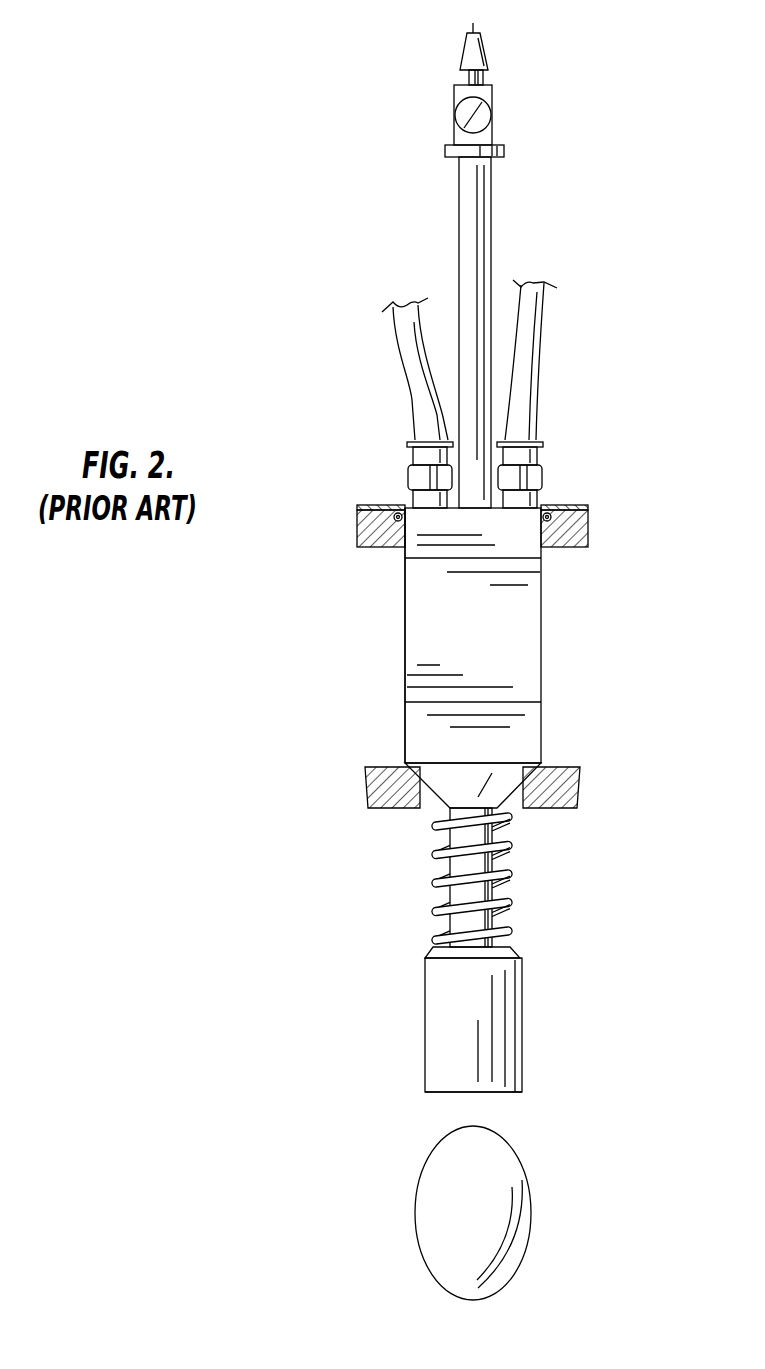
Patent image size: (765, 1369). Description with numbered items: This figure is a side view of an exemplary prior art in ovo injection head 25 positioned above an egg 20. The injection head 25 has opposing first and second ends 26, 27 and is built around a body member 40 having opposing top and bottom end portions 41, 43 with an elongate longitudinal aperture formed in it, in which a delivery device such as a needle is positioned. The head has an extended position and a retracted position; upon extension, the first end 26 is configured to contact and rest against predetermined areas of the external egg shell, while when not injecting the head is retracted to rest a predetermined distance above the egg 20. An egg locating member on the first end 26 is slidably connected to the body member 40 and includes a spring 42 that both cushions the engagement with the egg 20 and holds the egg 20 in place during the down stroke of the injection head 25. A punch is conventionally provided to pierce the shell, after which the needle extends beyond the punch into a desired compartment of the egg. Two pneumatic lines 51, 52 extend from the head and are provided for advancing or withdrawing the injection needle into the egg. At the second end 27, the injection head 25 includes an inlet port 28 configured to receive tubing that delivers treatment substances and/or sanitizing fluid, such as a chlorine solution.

The egg 20 is at (512, 1152).
The injection head 25 is at (542, 690).
The first end 26 is at (425, 1092).
The second end 27 is at (492, 84).
The inlet port 28 is at (460, 55).
The body member 40 is at (505, 883).
The top end portion 41 is at (403, 603).
The spring 42 is at (510, 929).
The bottom end portion 43 is at (507, 1015).
The pneumatic line 51 is at (408, 378).
The pneumatic line 52 is at (532, 378).